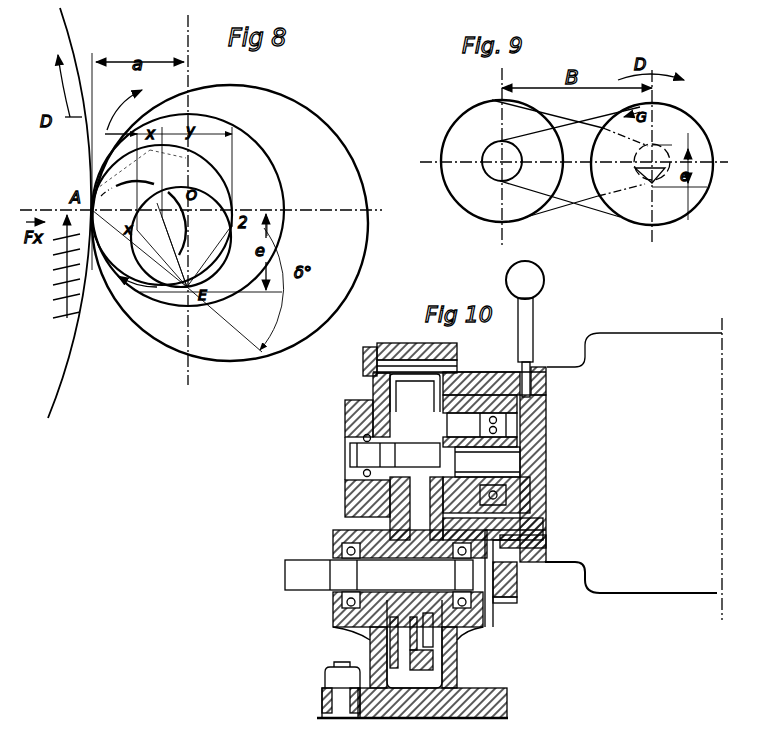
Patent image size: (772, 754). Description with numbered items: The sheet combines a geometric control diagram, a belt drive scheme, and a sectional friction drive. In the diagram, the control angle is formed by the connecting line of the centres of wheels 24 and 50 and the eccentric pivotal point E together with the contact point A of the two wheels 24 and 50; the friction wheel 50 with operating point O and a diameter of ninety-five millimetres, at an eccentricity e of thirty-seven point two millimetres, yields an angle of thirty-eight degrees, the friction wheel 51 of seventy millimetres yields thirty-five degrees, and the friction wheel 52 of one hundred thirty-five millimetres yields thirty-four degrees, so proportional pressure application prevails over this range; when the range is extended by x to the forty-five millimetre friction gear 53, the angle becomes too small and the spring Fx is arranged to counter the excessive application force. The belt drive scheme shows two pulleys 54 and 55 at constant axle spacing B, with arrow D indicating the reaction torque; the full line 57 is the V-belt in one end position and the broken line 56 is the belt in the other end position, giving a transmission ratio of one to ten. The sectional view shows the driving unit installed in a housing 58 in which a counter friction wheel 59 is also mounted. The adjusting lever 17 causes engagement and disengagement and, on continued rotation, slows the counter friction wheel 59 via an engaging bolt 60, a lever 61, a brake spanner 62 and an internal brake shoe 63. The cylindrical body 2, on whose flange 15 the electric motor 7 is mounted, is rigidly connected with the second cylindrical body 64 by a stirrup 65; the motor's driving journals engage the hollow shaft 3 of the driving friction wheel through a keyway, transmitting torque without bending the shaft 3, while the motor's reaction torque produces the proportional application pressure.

In FIG. 10, the cylindrical body 2 is at (542, 410).
In FIG. 10, the shaft 3 is at (395, 456).
In FIG. 10, the electric motor 7 is at (662, 345).
In FIG. 10, the flange 15 is at (538, 368).
In FIG. 10, the adjusting lever 17 is at (535, 322).
In FIG. 8, the wheel 24 is at (82, 213).
In FIG. 8, the friction wheel 50 is at (264, 157).
In FIG. 8, the friction wheel 51 is at (218, 173).
In FIG. 8, the friction wheel 52 is at (340, 140).
In FIG. 8, the friction gear 53 is at (126, 178).
In FIG. 9, the pulley 54 is at (482, 107).
In FIG. 9, the pulley 55 is at (686, 118).
In FIG. 9, the belt (broken line) 56 is at (598, 214).
In FIG. 9, the V-belt (full line) 57 is at (533, 133).
In FIG. 10, the housing 58 is at (508, 698).
In FIG. 10, the counter friction wheel 59 is at (400, 640).
In FIG. 10, the engaging bolt 60 is at (546, 566).
In FIG. 10, the lever 61 is at (515, 573).
In FIG. 10, the brake spanner 62 is at (507, 600).
In FIG. 10, the internal brake shoe 63 is at (433, 660).
In FIG. 10, the second cylindrical body 64 is at (354, 413).
In FIG. 10, the stirrup 65 is at (414, 384).